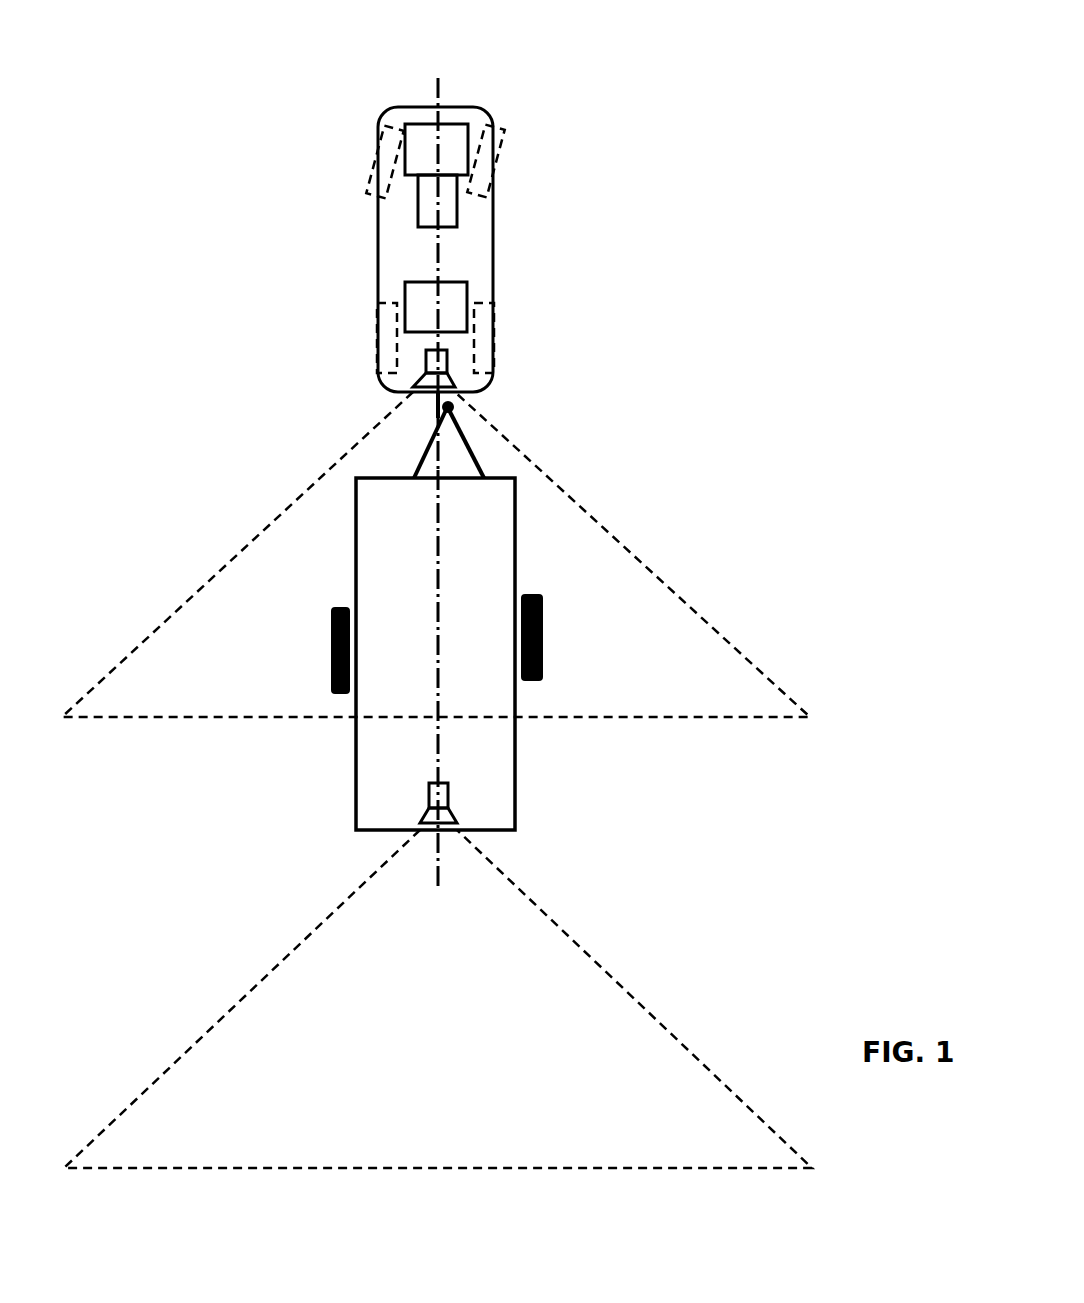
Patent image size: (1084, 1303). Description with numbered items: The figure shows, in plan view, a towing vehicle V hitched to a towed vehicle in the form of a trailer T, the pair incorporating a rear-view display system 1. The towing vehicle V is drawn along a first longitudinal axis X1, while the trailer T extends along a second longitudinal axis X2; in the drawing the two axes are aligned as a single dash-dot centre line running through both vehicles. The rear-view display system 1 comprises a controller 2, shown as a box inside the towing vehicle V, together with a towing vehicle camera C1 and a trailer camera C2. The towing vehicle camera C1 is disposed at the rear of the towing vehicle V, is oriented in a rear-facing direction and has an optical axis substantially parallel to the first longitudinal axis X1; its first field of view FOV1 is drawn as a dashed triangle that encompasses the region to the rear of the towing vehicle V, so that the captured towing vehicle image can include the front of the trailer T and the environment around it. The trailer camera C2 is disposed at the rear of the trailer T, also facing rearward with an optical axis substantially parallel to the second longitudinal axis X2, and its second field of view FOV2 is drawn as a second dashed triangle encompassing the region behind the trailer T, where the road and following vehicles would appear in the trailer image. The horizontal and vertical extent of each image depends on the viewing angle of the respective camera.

The rear-view display system 1 is at (790, 225).
The controller 2 is at (445, 322).
The towing vehicle V is at (513, 120).
The trailer T is at (528, 520).
The towing vehicle camera C1 is at (447, 372).
The trailer camera C2 is at (445, 800).
The first longitudinal axis X1 is at (460, 258).
The second longitudinal axis X2 is at (463, 700).
The first field of view FOV1 is at (436, 554).
The second field of view FOV2 is at (438, 999).